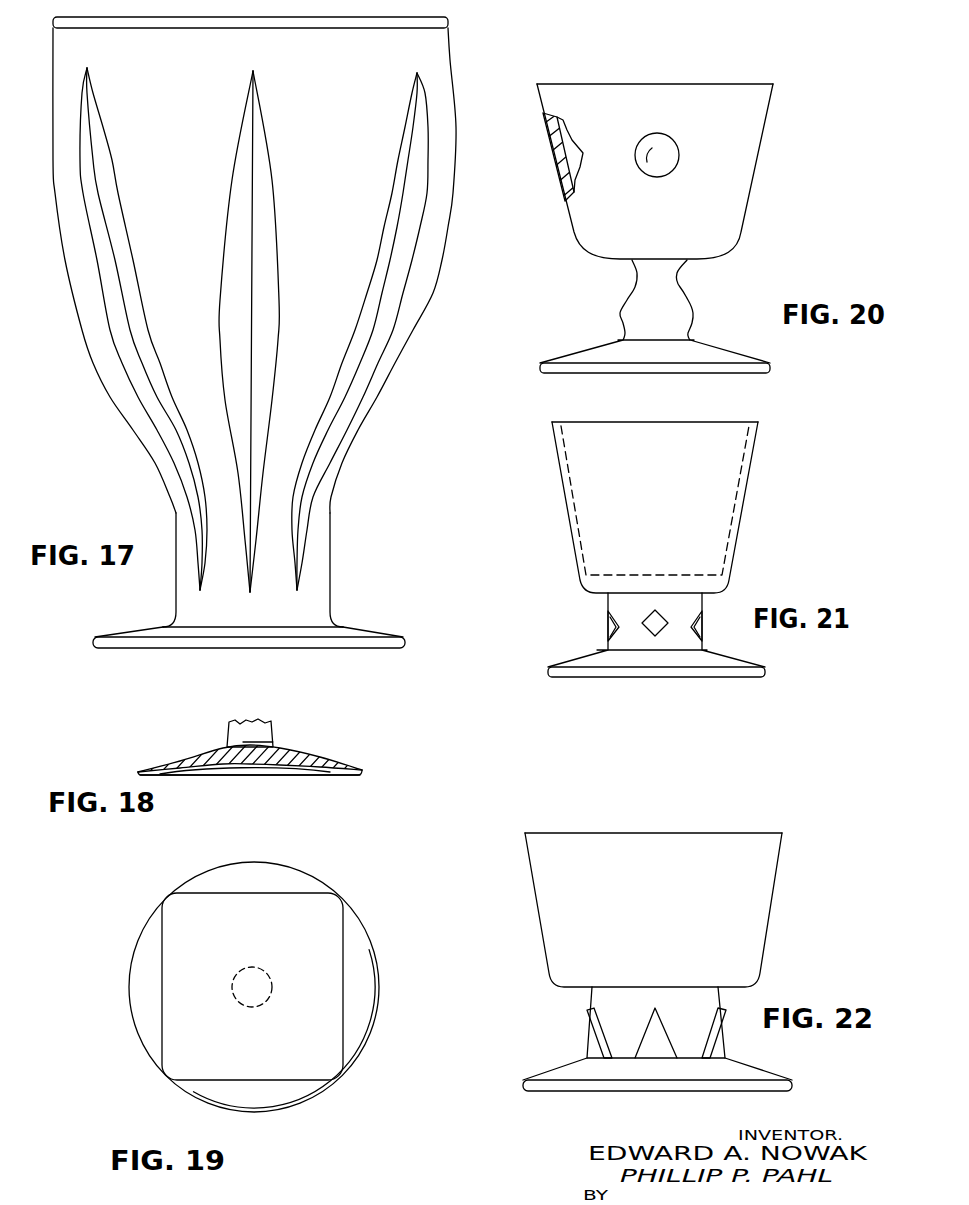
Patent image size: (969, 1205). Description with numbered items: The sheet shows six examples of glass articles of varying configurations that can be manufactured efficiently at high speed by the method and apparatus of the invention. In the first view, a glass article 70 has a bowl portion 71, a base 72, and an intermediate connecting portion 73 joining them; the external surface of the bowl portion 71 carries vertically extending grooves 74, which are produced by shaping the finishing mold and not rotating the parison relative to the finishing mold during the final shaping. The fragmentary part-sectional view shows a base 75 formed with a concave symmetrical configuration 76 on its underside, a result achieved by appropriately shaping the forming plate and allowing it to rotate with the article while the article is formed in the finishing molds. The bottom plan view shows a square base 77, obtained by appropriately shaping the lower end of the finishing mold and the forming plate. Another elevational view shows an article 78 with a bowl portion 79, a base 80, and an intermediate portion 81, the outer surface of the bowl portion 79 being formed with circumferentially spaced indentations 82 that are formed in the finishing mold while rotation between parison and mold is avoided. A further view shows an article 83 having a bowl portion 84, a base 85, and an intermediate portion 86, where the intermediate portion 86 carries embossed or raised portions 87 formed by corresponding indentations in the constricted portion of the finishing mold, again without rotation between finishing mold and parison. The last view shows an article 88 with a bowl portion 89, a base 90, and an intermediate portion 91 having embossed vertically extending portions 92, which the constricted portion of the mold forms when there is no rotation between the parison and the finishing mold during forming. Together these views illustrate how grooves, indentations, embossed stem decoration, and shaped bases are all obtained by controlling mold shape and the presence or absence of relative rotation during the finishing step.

In FIG. 17, the glass article 70 is at (460, 52).
In FIG. 17, the bowl portion 71 is at (436, 260).
In FIG. 17, the base 72 is at (355, 638).
In FIG. 17, the intermediate connecting portion 73 is at (322, 557).
In FIG. 17, the vertically extending grooves 74 is at (399, 334).
In FIG. 18, the base 75 is at (323, 762).
In FIG. 18, the concave symmetrical configuration 76 is at (293, 773).
In FIG. 19, the square base 77 is at (333, 923).
In FIG. 20, the article 78 is at (764, 176).
In FIG. 20, the bowl portion 79 is at (745, 220).
In FIG. 20, the base 80 is at (717, 355).
In FIG. 20, the intermediate portion 81 is at (688, 302).
In FIG. 20, the circumferentially spaced indentations 82 is at (553, 156).
In FIG. 21, the article 83 is at (749, 537).
In FIG. 21, the bowl portion 84 is at (750, 497).
In FIG. 21, the base 85 is at (738, 665).
In FIG. 21, the intermediate portion 86 is at (711, 618).
In FIG. 21, the embossed or raised portions 87 is at (606, 627).
In FIG. 22, the article 88 is at (771, 928).
In FIG. 22, the bowl portion 89 is at (770, 878).
In FIG. 22, the base 90 is at (753, 1072).
In FIG. 22, the intermediate portion 91 is at (720, 994).
In FIG. 22, the embossed vertically extending portions 92 is at (587, 1038).